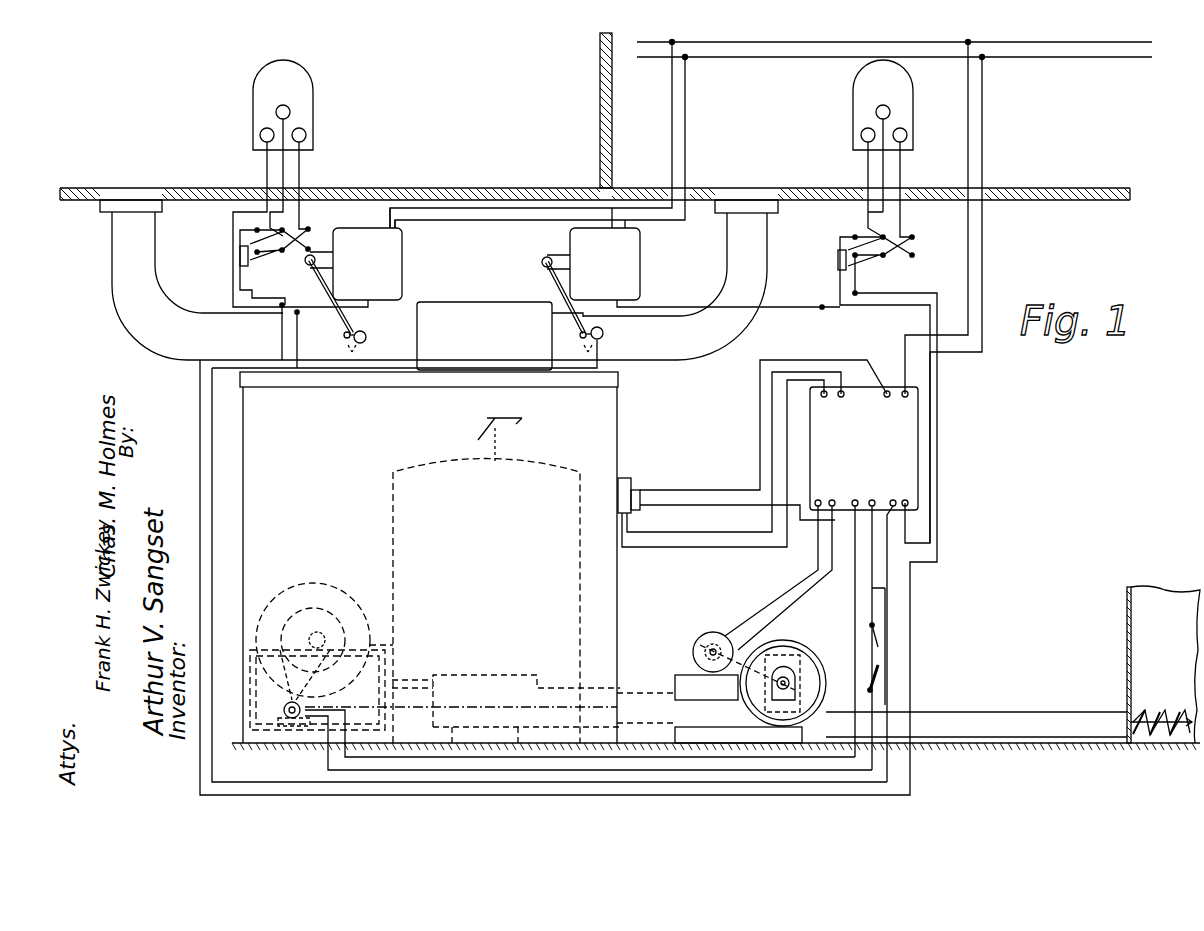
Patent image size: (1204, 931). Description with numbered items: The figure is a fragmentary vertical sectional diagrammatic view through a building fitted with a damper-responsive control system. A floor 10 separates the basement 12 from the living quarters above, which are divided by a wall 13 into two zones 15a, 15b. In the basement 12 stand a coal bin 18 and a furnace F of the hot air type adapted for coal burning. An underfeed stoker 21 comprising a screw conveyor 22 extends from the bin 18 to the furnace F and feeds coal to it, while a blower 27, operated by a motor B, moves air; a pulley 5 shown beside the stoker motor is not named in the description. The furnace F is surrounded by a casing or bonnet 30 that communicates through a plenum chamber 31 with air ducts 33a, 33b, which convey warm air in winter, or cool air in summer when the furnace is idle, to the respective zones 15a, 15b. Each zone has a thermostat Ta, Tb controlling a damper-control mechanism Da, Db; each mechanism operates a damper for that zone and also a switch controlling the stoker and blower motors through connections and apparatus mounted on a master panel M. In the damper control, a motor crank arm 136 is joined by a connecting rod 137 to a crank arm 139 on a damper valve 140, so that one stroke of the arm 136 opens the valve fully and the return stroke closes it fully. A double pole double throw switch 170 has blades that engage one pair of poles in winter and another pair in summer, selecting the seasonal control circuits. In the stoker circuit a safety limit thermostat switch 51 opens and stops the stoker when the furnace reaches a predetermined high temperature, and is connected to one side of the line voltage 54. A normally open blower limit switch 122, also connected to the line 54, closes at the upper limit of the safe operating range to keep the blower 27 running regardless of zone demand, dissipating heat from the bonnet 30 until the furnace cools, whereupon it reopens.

The floor 10 is at (1103, 188).
The basement 12 is at (146, 350).
The wall 13 is at (598, 62).
The zone 15a is at (422, 131).
The zone 15b is at (775, 125).
The coal bin 18 is at (1163, 664).
The underfeed stoker 21 is at (828, 664).
The screw conveyor 22 is at (1145, 718).
The blower 27 is at (340, 585).
The casing 30 is at (628, 421).
The plenum chamber 31 is at (484, 336).
The air duct 33a is at (157, 272).
The air duct 33b is at (730, 287).
The safety limit control thermostat switch 51 is at (633, 480).
The line voltage 54 is at (1158, 49).
The blower limit switch 122 is at (642, 494).
The crank arm 136 is at (318, 252).
The connecting rod 137 is at (330, 298).
The crank arm 139 is at (347, 345).
The damper valve 140 is at (360, 340).
The double pole double throw switch 170 is at (264, 263).
The thermostat Ta is at (312, 95).
The thermostat Tb is at (905, 118).
The damper-control mechanism Da is at (367, 254).
The damper-control mechanism Db is at (696, 272).
The master panel M is at (821, 584).
The blower motor B is at (285, 700).
The furnace F is at (506, 580).
The pulley 5 is at (698, 645).